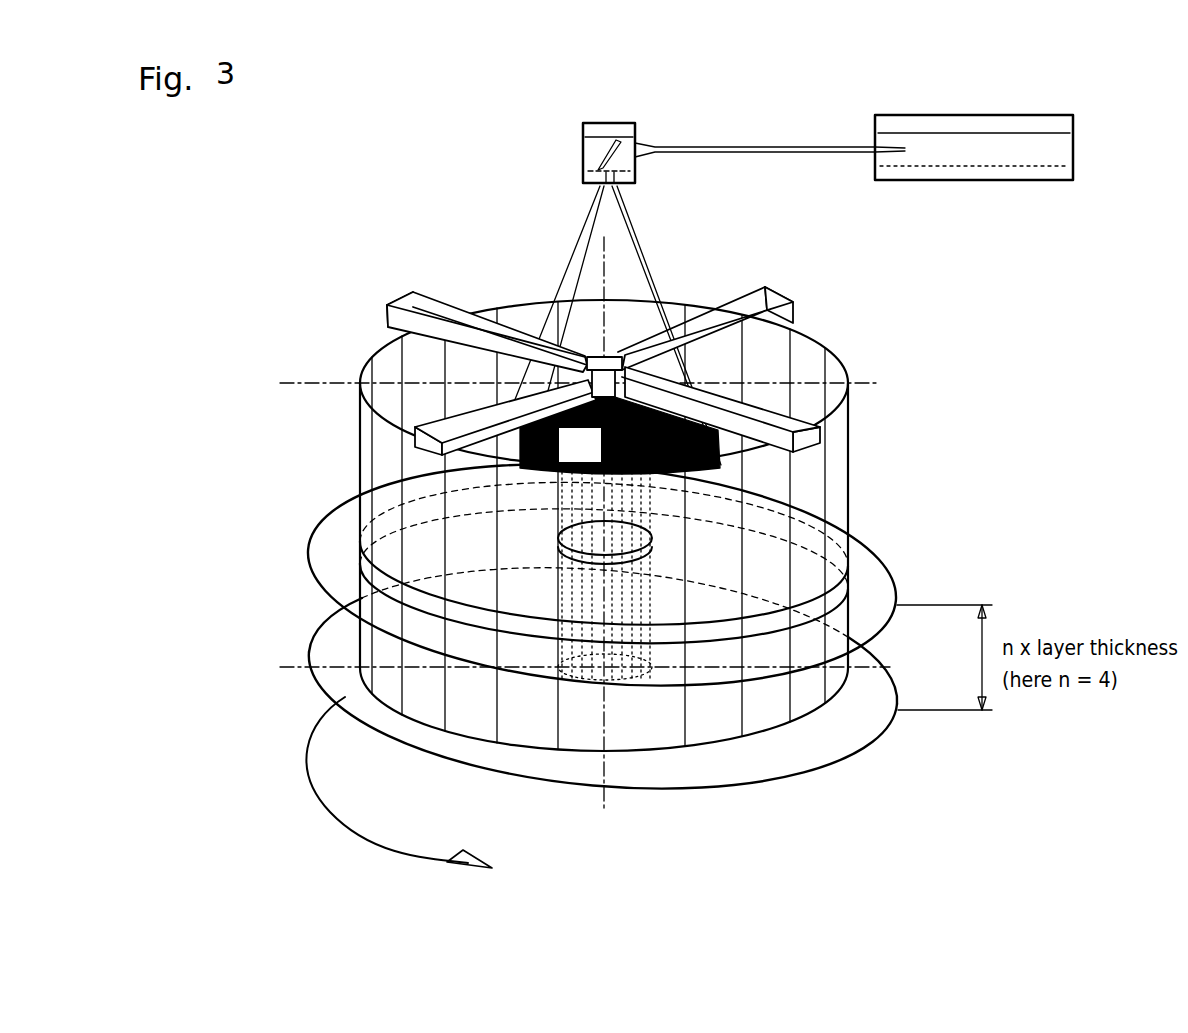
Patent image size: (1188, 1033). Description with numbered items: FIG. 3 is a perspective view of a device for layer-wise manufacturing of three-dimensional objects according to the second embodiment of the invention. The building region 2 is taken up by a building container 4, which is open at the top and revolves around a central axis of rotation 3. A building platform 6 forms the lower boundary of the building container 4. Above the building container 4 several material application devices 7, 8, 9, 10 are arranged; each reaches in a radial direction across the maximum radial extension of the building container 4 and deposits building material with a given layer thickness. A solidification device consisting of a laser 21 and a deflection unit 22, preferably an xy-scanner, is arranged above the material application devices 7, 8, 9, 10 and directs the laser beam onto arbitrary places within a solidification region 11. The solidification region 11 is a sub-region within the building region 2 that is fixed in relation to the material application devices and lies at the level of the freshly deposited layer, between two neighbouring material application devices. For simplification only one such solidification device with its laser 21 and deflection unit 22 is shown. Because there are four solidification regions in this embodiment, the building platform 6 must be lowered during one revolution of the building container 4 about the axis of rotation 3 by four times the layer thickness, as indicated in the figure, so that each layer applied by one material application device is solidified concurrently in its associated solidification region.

The building region 2 is at (420, 514).
The axis of rotation 3 is at (585, 543).
The building container 4 is at (455, 575).
The building platform 6 is at (852, 543).
The material application device 7 is at (413, 437).
The material application device 8 is at (822, 440).
The material application device 9 is at (795, 301).
The material application device 10 is at (397, 293).
The solidification region 11 is at (620, 435).
The laser 21 is at (974, 147).
The deflection unit 22 is at (583, 150).